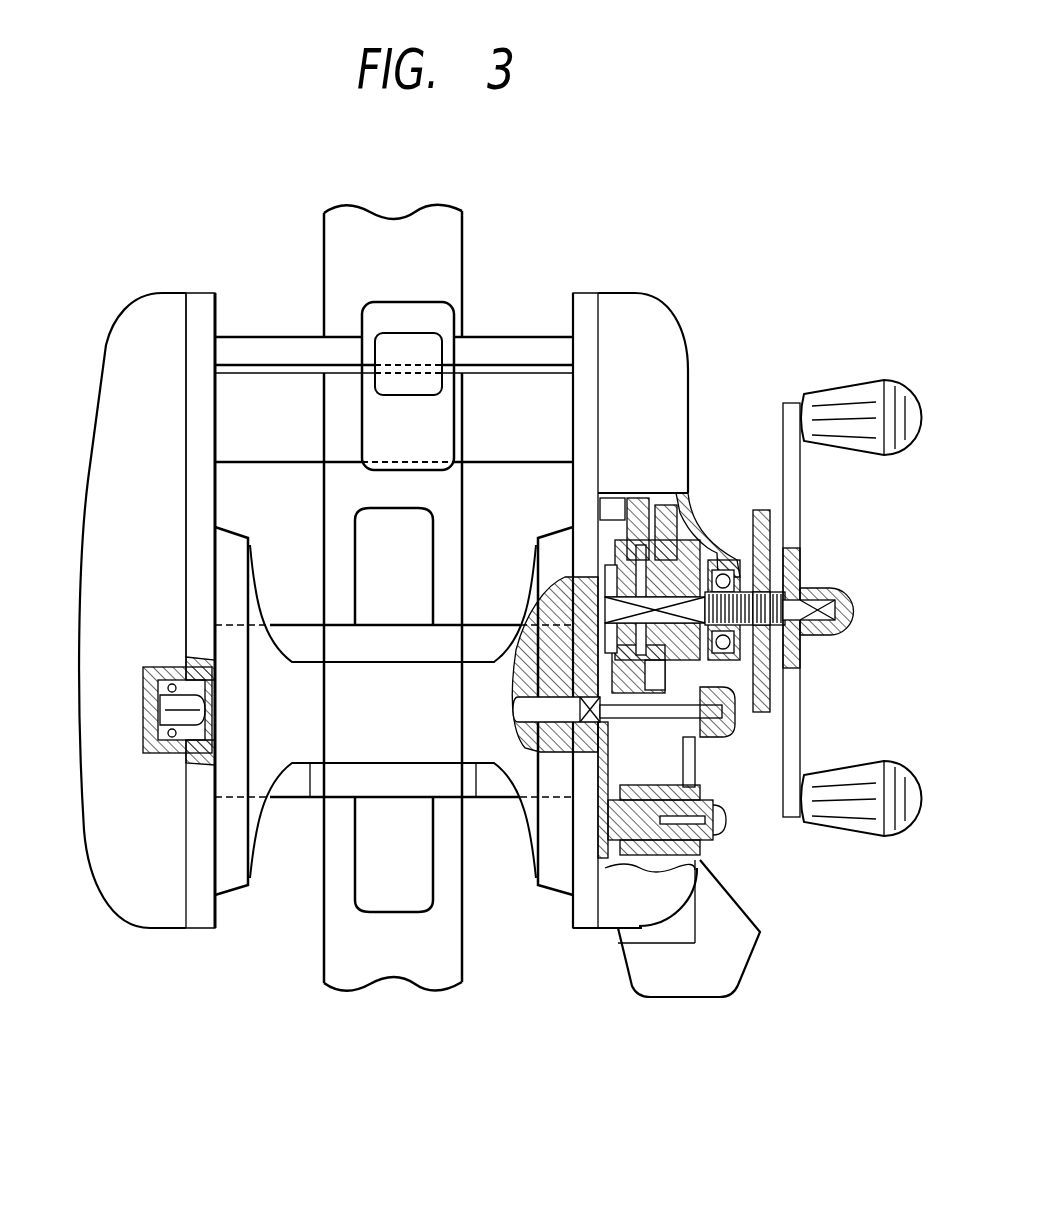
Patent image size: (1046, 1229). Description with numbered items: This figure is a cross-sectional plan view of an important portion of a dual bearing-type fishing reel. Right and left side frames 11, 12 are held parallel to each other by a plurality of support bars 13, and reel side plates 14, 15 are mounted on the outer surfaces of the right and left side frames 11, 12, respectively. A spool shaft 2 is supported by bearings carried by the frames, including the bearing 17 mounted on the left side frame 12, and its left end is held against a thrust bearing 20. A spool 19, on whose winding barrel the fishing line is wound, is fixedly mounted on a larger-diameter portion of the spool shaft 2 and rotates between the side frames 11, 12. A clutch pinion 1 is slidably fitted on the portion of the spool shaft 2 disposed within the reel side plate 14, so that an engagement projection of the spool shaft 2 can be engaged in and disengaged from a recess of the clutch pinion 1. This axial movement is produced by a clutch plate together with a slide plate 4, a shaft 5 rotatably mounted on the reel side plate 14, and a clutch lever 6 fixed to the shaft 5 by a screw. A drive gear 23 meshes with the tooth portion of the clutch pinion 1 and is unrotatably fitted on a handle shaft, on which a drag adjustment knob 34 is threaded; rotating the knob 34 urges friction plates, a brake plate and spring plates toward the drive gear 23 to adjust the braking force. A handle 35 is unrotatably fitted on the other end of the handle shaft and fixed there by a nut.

The clutch pinion 1 is at (656, 733).
The spool shaft 2 is at (530, 753).
The slide plate 4 is at (609, 868).
The shaft 5 is at (648, 838).
The clutch lever 6 is at (748, 933).
The right side frame 11 is at (583, 300).
The left side frame 12 is at (196, 300).
The support bars 13 is at (290, 800).
The reel side plate 14 is at (646, 312).
The reel side plate 15 is at (160, 305).
The bearing 17 is at (168, 755).
The spool 19 is at (310, 765).
The thrust bearing 20 is at (190, 760).
The drive gear 23 is at (666, 520).
The drag adjustment knob 34 is at (756, 510).
The handle 35 is at (794, 508).